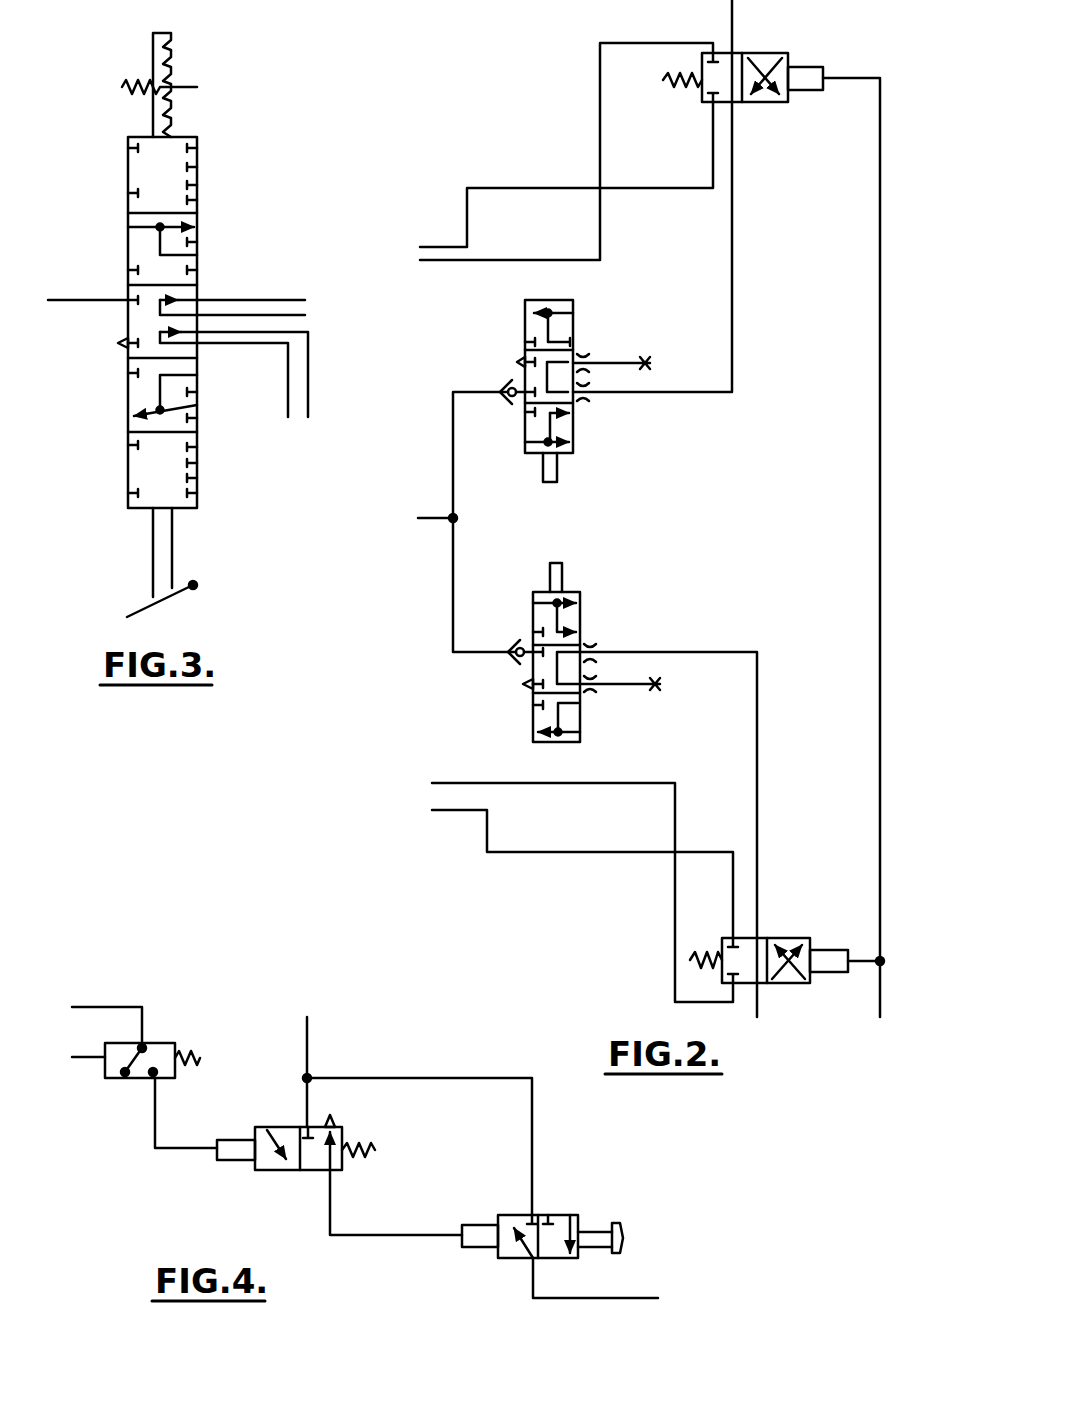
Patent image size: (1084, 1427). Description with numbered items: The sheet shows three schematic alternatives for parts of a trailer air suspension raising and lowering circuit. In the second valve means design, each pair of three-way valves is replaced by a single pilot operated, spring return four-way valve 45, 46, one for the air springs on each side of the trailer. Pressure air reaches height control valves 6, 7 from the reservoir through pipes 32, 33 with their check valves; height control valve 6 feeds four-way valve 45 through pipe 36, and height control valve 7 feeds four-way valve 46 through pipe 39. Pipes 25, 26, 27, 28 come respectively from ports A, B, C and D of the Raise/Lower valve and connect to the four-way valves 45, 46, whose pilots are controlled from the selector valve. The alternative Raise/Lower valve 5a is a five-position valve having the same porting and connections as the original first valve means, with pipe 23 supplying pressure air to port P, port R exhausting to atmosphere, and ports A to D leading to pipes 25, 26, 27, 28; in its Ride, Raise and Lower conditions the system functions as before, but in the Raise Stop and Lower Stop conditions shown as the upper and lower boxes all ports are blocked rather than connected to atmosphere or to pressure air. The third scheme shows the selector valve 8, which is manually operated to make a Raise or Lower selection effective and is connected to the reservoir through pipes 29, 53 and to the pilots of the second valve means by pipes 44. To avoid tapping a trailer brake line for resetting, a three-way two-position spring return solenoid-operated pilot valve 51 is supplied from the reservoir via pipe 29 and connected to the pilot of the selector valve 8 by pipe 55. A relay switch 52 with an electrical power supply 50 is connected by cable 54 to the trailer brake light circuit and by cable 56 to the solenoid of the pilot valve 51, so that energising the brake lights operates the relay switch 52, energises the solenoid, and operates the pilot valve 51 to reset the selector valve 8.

In FIG. 3, the Raise/Lower valve 5a is at (204, 124).
In FIG. 3, the pipe 23 is at (82, 297).
In FIG. 3, the pipe 25 is at (306, 399).
In FIG. 2, the pipe 25 is at (605, 783).
In FIG. 3, the pipe 26 is at (287, 364).
In FIG. 2, the pipe 26 is at (573, 852).
In FIG. 3, the pipe 27 is at (275, 313).
In FIG. 2, the pipe 27 is at (600, 92).
In FIG. 3, the pipe 28 is at (238, 297).
In FIG. 2, the pipe 28 is at (517, 188).
In FIG. 2, the height control valve 6 is at (580, 312).
In FIG. 2, the height control valve 7 is at (579, 584).
In FIG. 2, the pipe 32 is at (455, 474).
In FIG. 2, the pipe 33 is at (455, 588).
In FIG. 2, the pipe 36 is at (736, 250).
In FIG. 2, the pipe 39 is at (760, 766).
In FIG. 2, the 4-way valve 45 is at (770, 46).
In FIG. 2, the 4-way valve 46 is at (790, 932).
In FIG. 4, the selector valve 8 is at (565, 1208).
In FIG. 4, the pipe 29 is at (309, 1040).
In FIG. 4, the pipes 44 is at (617, 1298).
In FIG. 4, the electrical power supply 50 is at (100, 1005).
In FIG. 4, the pilot valve 51 is at (246, 1164).
In FIG. 4, the relay switch 52 is at (153, 1043).
In FIG. 4, the pipe 53 is at (437, 1078).
In FIG. 4, the cable 54 is at (90, 1060).
In FIG. 4, the pipe 55 is at (395, 1233).
In FIG. 4, the cable 56 is at (157, 1113).